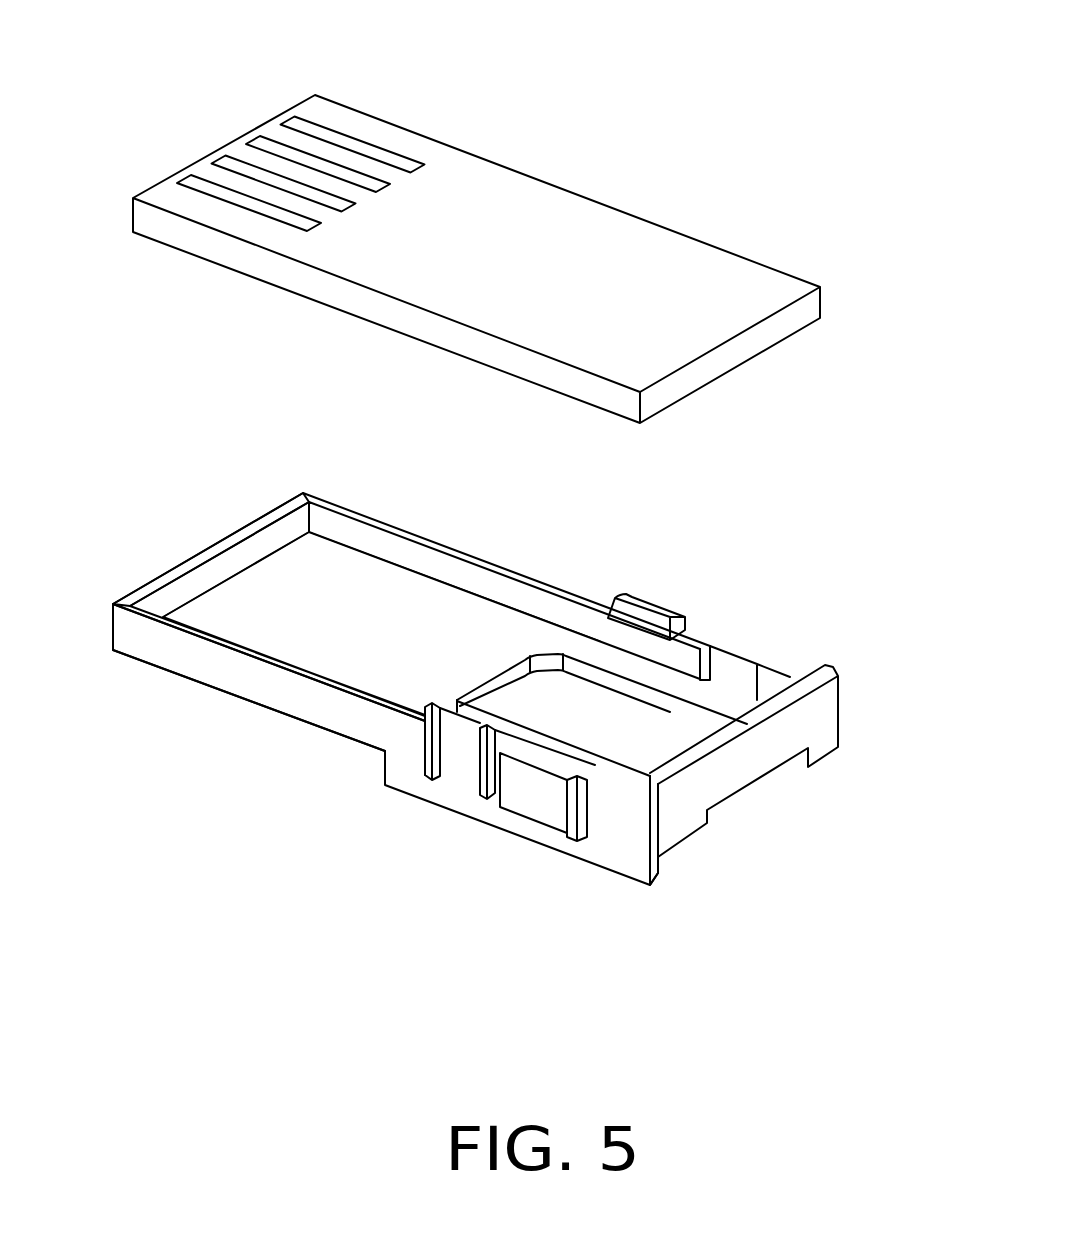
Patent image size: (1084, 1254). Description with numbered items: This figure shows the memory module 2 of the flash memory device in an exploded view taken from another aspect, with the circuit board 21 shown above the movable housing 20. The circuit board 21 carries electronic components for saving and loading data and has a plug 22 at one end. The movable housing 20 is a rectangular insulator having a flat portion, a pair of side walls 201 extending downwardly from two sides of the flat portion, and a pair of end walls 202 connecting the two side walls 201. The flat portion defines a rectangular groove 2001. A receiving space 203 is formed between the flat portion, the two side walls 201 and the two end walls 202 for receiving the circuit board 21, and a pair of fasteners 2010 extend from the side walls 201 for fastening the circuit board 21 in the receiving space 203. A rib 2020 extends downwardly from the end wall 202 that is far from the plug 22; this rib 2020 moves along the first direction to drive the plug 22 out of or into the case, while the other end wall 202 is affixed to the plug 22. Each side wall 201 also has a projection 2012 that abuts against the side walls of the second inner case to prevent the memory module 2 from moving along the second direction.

The memory module 2 is at (870, 202).
The movable housing 20 is at (543, 542).
The circuit board 21 is at (578, 140).
The plug 22 is at (318, 167).
The side walls 201 is at (193, 660).
The end walls 202 is at (215, 568).
The receiving space 203 is at (483, 650).
The rectangular groove 2001 is at (630, 720).
The fasteners 2010 is at (638, 620).
The projection 2012 is at (523, 798).
The rib 2020 is at (643, 790).